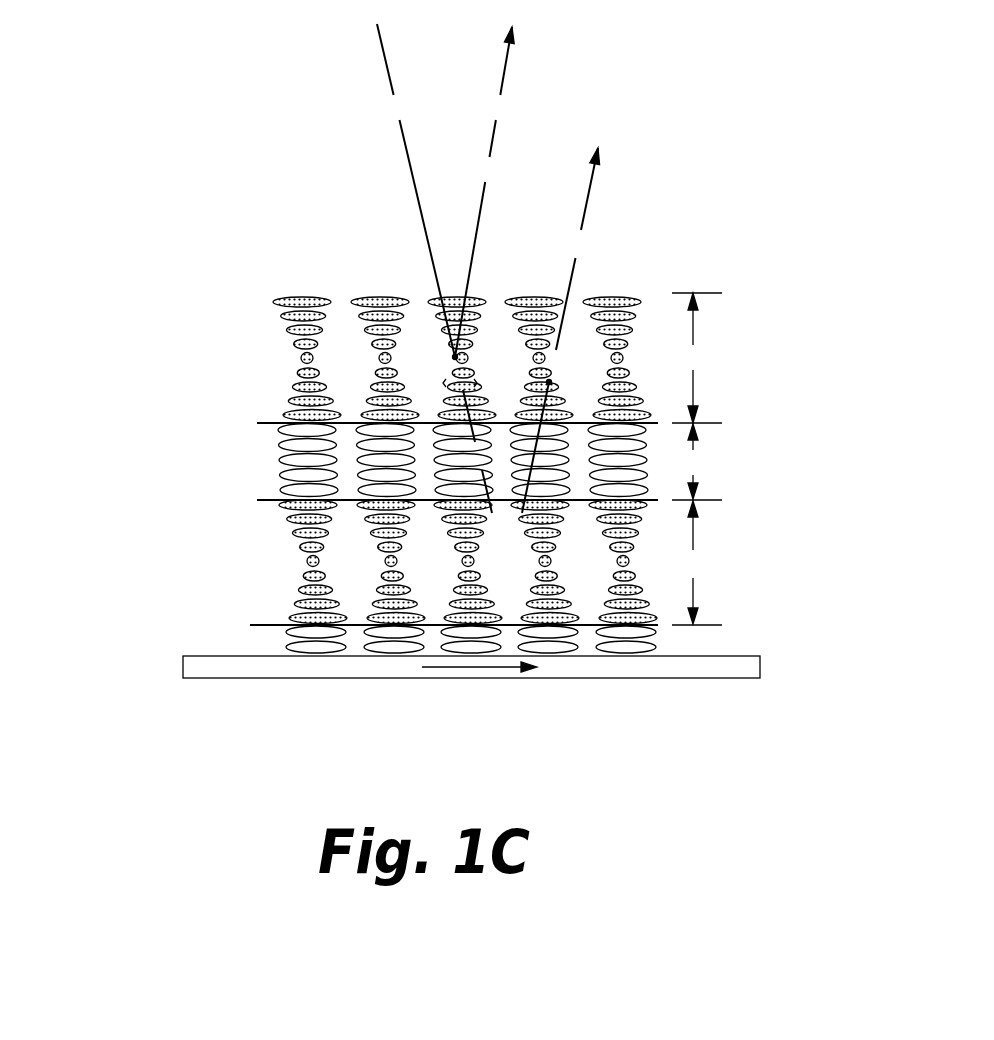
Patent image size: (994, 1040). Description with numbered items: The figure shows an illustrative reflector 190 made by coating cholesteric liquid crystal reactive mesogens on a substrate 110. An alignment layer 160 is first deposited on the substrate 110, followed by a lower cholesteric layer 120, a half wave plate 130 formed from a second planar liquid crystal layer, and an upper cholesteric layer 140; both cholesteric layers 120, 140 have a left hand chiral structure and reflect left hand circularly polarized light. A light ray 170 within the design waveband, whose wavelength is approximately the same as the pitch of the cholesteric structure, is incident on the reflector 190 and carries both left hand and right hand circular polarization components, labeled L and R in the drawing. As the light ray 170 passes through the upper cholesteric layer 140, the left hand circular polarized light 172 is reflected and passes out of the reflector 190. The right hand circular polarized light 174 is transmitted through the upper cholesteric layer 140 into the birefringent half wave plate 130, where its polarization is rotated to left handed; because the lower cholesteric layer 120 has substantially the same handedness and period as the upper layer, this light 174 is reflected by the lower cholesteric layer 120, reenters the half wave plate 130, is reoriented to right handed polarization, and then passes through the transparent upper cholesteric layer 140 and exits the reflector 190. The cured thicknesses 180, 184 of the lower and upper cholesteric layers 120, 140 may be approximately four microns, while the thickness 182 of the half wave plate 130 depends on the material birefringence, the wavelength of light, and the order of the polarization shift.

The substrate 110 is at (727, 662).
The lower cholesteric layer 120 is at (245, 503).
The half wave plate 130 is at (245, 426).
The upper cholesteric layer 140 is at (245, 302).
The alignment layer 160 is at (243, 655).
The light ray 170 is at (418, 119).
The left hand circular polarized light 172 is at (479, 119).
The right hand circular polarized light 174 is at (559, 254).
The cured thickness of the lower cholesteric layer 180 is at (697, 562).
The thickness of the half wave plate 182 is at (697, 461).
The cured thickness of the upper cholesteric layer 184 is at (697, 358).
The reflector 190 is at (122, 292).